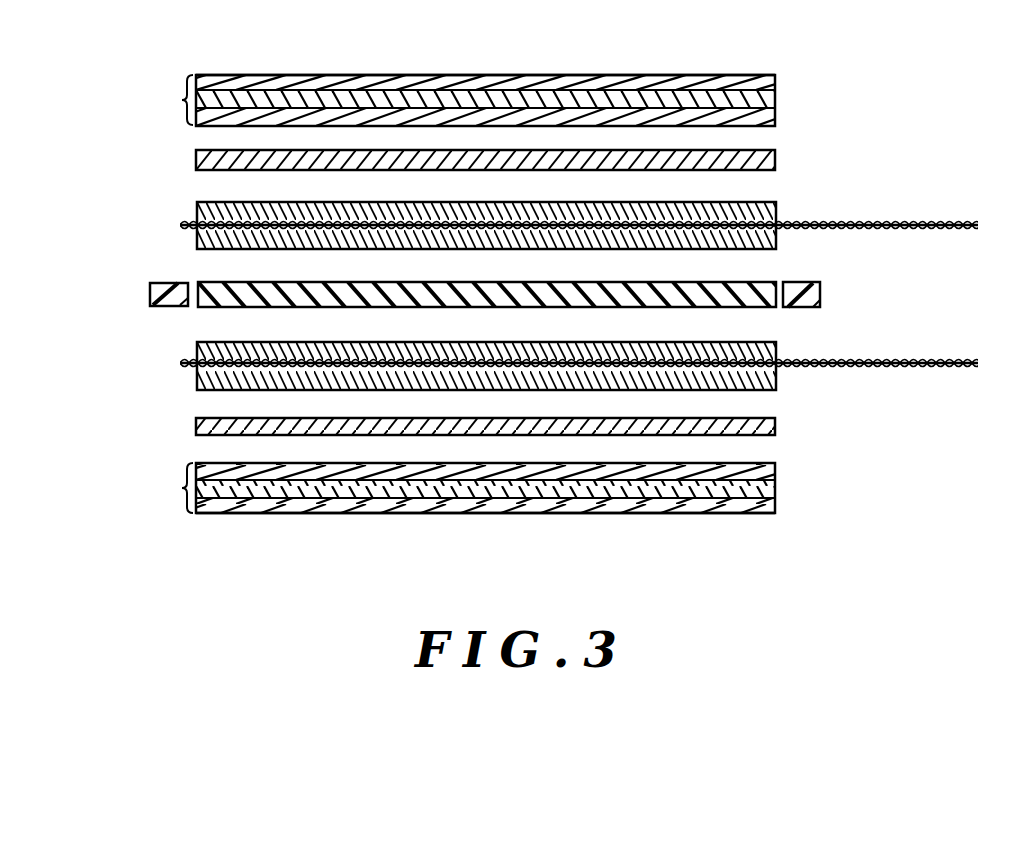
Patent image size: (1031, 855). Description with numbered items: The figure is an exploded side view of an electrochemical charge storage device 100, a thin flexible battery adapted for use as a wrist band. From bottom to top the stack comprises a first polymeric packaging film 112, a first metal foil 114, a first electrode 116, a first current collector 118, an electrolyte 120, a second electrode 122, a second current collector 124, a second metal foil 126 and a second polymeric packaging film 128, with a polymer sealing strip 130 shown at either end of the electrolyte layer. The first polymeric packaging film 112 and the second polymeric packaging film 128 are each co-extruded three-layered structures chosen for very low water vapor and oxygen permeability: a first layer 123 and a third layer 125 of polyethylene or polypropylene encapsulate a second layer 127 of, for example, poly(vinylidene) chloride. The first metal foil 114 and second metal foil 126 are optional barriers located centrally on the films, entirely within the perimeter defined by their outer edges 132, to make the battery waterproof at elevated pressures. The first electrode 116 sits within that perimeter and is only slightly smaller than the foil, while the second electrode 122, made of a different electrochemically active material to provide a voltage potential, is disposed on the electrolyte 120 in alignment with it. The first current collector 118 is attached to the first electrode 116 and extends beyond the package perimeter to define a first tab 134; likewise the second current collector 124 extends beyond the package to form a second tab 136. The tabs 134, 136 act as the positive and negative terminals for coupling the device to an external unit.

The electrochemical charge storage device 100 is at (1019, 543).
The first polymeric packaging film 112 is at (178, 489).
The first metal foil 114 is at (776, 427).
The first electrode 116 is at (190, 388).
The first current collector 118 is at (780, 363).
The electrolyte 120 is at (196, 309).
The second electrode 122 is at (193, 203).
The first layer 123 is at (776, 79).
The second current collector 124 is at (780, 223).
The third layer 125 is at (776, 119).
The second metal foil 126 is at (776, 161).
The second layer 127 is at (775, 98).
The second polymeric packaging film 128 is at (172, 101).
The polymer sealing strip 130 is at (150, 283).
The outer edges 132 is at (223, 72).
The first tab 134 is at (952, 360).
The second tab 136 is at (950, 220).